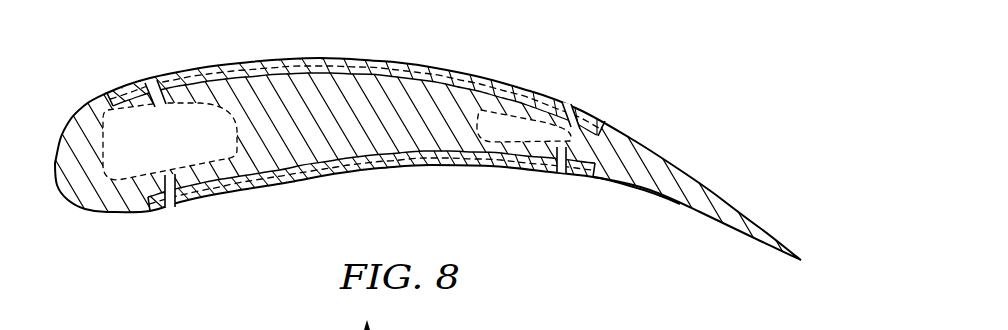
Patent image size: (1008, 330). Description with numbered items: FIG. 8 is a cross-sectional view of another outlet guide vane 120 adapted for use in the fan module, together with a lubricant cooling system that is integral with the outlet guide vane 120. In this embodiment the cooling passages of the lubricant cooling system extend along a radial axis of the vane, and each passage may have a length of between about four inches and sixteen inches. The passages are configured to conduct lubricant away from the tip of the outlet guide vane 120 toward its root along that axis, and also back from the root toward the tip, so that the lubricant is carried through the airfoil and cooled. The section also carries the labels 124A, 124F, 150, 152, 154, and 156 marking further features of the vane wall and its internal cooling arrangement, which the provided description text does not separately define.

The outlet guide vane 120 is at (728, 94).
The second internal cavity 150 is at (505, 124).
The first internal cavity 152 is at (198, 128).
The cooling passages 154 is at (568, 152).
The forward cooling passage 156 is at (136, 106).
The aft portion of pressure side wall 124A is at (627, 190).
The forward pressure side cooling passage 124F is at (157, 214).